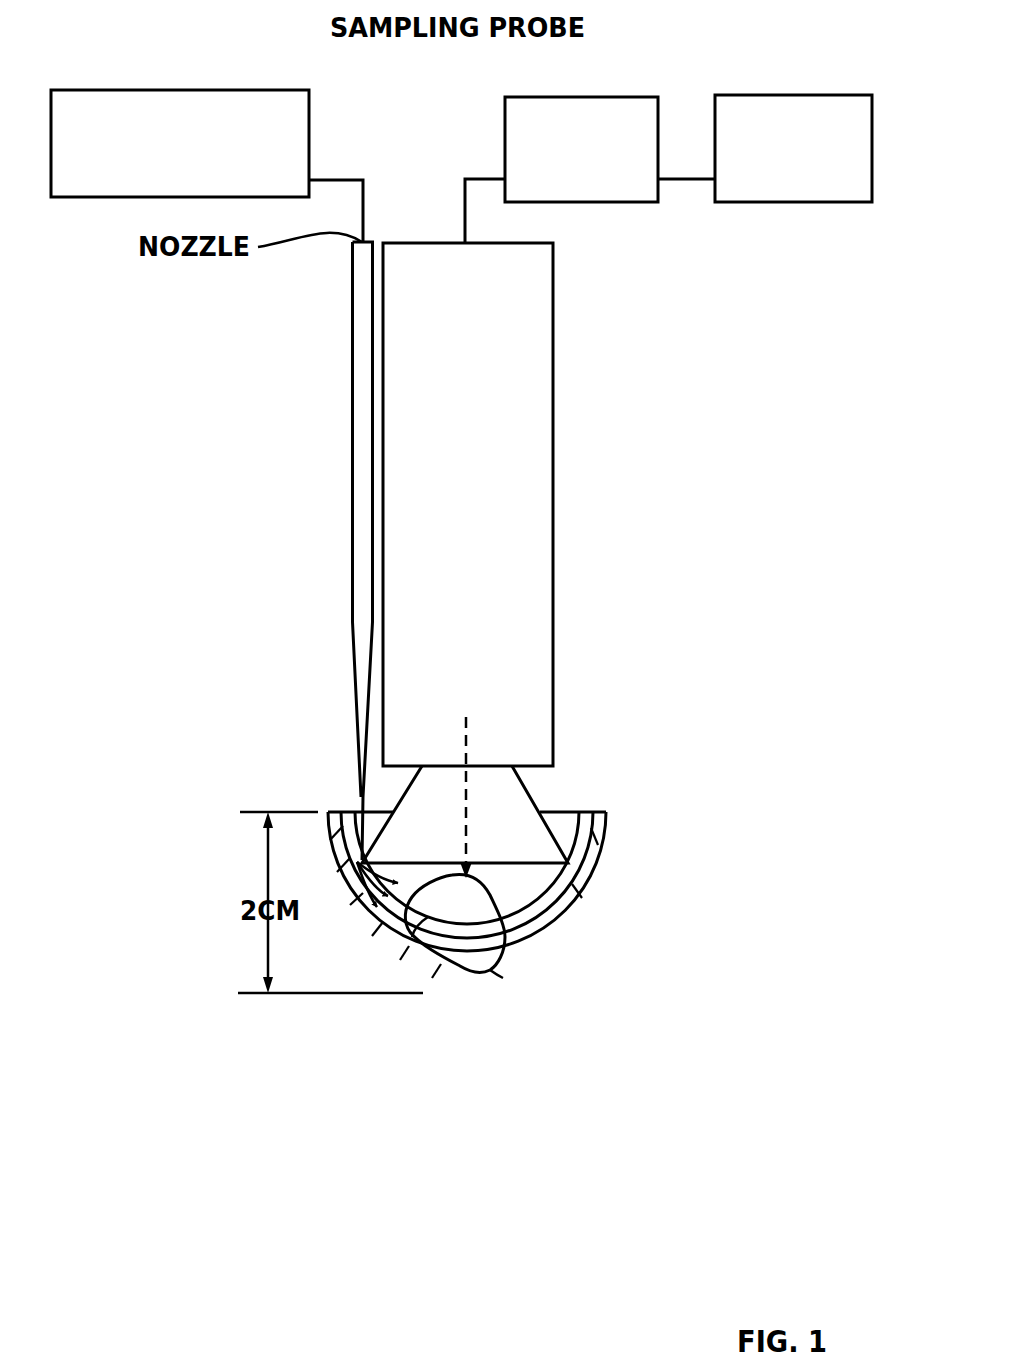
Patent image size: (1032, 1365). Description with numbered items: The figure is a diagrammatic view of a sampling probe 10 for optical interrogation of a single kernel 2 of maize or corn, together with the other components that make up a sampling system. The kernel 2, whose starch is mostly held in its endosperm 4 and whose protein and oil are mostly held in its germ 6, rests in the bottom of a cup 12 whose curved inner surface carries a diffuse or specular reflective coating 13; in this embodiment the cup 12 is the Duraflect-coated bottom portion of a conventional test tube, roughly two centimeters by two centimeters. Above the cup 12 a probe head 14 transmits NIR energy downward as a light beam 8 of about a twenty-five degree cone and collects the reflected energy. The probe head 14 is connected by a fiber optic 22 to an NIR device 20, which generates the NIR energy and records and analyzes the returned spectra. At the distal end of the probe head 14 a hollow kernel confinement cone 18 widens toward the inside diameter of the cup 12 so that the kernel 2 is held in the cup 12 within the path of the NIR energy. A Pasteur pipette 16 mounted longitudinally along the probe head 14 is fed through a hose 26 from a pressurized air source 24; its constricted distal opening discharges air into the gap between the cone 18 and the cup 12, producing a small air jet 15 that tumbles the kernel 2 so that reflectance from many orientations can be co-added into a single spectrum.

The kernel 2 is at (466, 944).
The endosperm 4 is at (428, 917).
The germ 6 is at (503, 978).
The light beam 8 is at (467, 811).
The sampling probe 10 is at (310, 562).
The cup 12 is at (614, 821).
The reflective coating 13 is at (595, 899).
The probe head 14 is at (558, 372).
The air jet 15 is at (353, 847).
The Pasteur pipette 16 is at (348, 372).
The kernel confinement cone 18 is at (375, 828).
The NIR device 20 is at (788, 91).
The fiber optic 22 is at (598, 97).
The pressurized air source 24 is at (217, 88).
The hose 26 is at (335, 177).